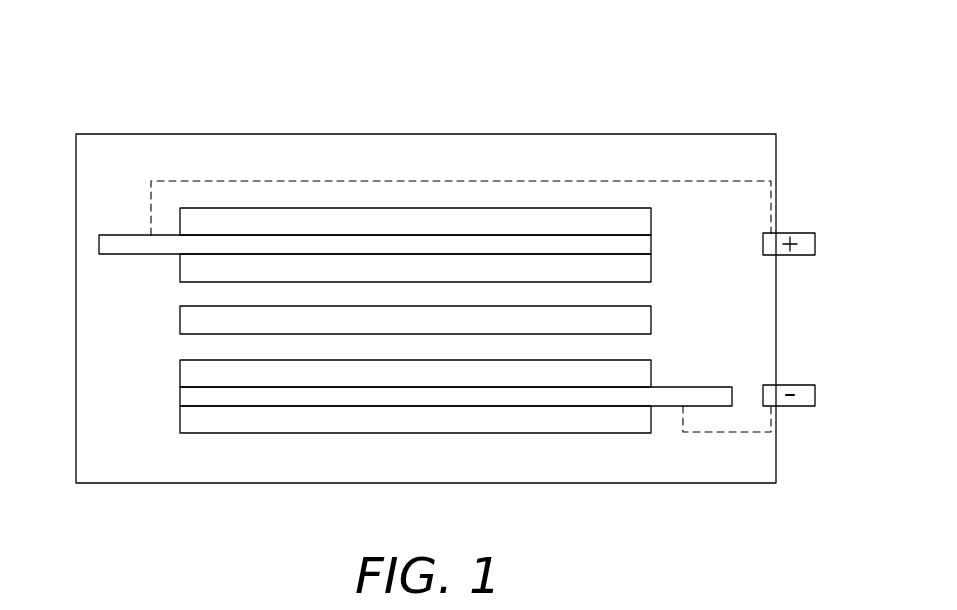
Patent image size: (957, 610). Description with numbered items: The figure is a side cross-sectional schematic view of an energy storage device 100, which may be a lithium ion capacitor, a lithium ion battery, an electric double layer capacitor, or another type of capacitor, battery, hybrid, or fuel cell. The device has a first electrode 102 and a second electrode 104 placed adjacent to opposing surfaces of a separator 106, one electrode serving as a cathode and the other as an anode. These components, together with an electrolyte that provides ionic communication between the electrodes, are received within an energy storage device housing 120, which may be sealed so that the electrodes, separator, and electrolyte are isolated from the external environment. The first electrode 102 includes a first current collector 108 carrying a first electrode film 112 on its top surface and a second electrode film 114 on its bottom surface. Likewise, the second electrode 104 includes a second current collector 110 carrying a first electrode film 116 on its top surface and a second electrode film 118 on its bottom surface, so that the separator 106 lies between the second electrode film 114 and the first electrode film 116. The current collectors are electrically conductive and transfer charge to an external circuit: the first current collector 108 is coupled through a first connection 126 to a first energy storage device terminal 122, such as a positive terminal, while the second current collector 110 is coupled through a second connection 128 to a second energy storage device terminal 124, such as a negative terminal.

The energy storage device 100 is at (106, 60).
The first electrode 102 is at (426, 244).
The second electrode 104 is at (407, 398).
The separator 106 is at (651, 320).
The first current collector 108 is at (648, 246).
The second current collector 110 is at (432, 398).
The first electrode film 112 is at (648, 220).
The second electrode film 114 is at (648, 276).
The first electrode film 116 is at (392, 373).
The second electrode film 118 is at (392, 421).
The energy storage device housing 120 is at (633, 134).
The first energy storage device terminal 122 is at (801, 233).
The second energy storage device terminal 124 is at (808, 407).
The first connection 126 is at (150, 192).
The second connection 128 is at (688, 437).